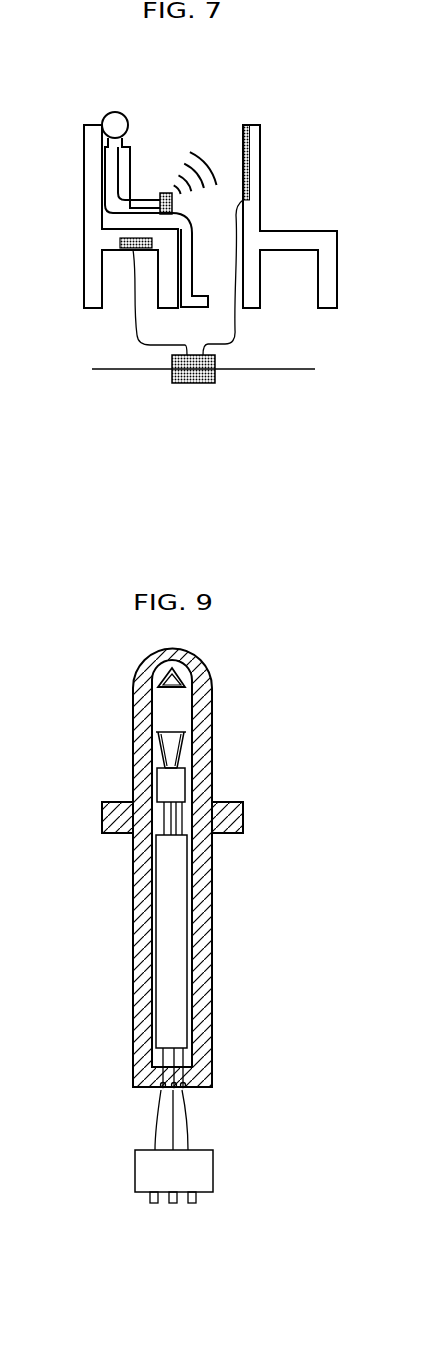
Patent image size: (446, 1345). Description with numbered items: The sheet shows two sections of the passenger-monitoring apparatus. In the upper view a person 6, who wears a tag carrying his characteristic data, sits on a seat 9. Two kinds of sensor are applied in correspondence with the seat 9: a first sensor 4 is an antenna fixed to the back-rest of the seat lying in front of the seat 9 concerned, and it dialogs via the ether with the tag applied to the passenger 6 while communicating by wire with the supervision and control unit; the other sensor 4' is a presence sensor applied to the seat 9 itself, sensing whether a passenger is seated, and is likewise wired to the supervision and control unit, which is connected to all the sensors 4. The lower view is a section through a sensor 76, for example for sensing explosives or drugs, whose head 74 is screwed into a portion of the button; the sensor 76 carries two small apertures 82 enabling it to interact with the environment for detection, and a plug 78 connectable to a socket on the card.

In FIG. 7, the sensor 4 is at (291, 141).
In FIG. 7, the presence sensor 4' is at (96, 287).
In FIG. 7, the person 6 is at (125, 160).
In FIG. 7, the seat 9 is at (253, 223).
In FIG. 9, the head 74 is at (133, 712).
In FIG. 9, the sensor 76 is at (133, 952).
In FIG. 9, the plug 78 is at (162, 1165).
In FIG. 9, the small apertures 82 is at (190, 670).